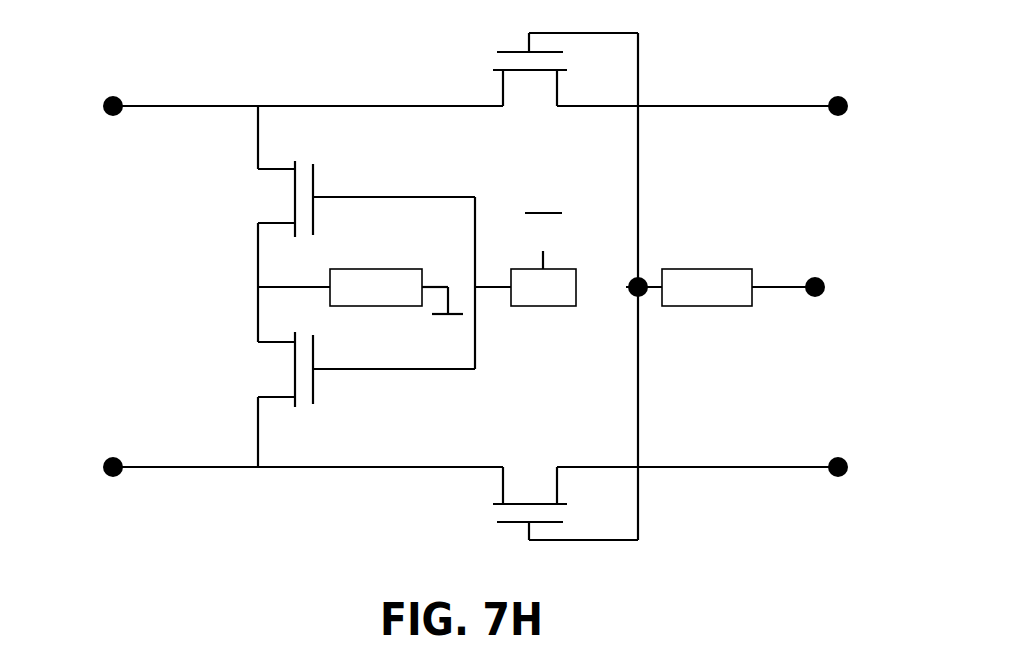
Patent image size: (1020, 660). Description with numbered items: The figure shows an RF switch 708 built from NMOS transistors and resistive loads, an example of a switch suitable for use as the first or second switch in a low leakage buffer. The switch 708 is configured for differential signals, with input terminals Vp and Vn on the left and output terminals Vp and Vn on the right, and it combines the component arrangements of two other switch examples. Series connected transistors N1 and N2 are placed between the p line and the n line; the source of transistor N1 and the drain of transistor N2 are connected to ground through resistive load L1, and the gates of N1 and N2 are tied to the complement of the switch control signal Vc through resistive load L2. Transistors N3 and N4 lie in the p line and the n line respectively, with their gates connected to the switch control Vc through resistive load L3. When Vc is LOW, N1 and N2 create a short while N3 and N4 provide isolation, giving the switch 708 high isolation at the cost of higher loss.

The RF switch 708 is at (136, 615).
The transistor N1 is at (366, 194).
The transistor N2 is at (366, 369).
The transistor N3 is at (530, 69).
The transistor N4 is at (530, 488).
The resistive load L1 is at (376, 287).
The resistive load L2 is at (543, 278).
The resistive load L3 is at (707, 287).